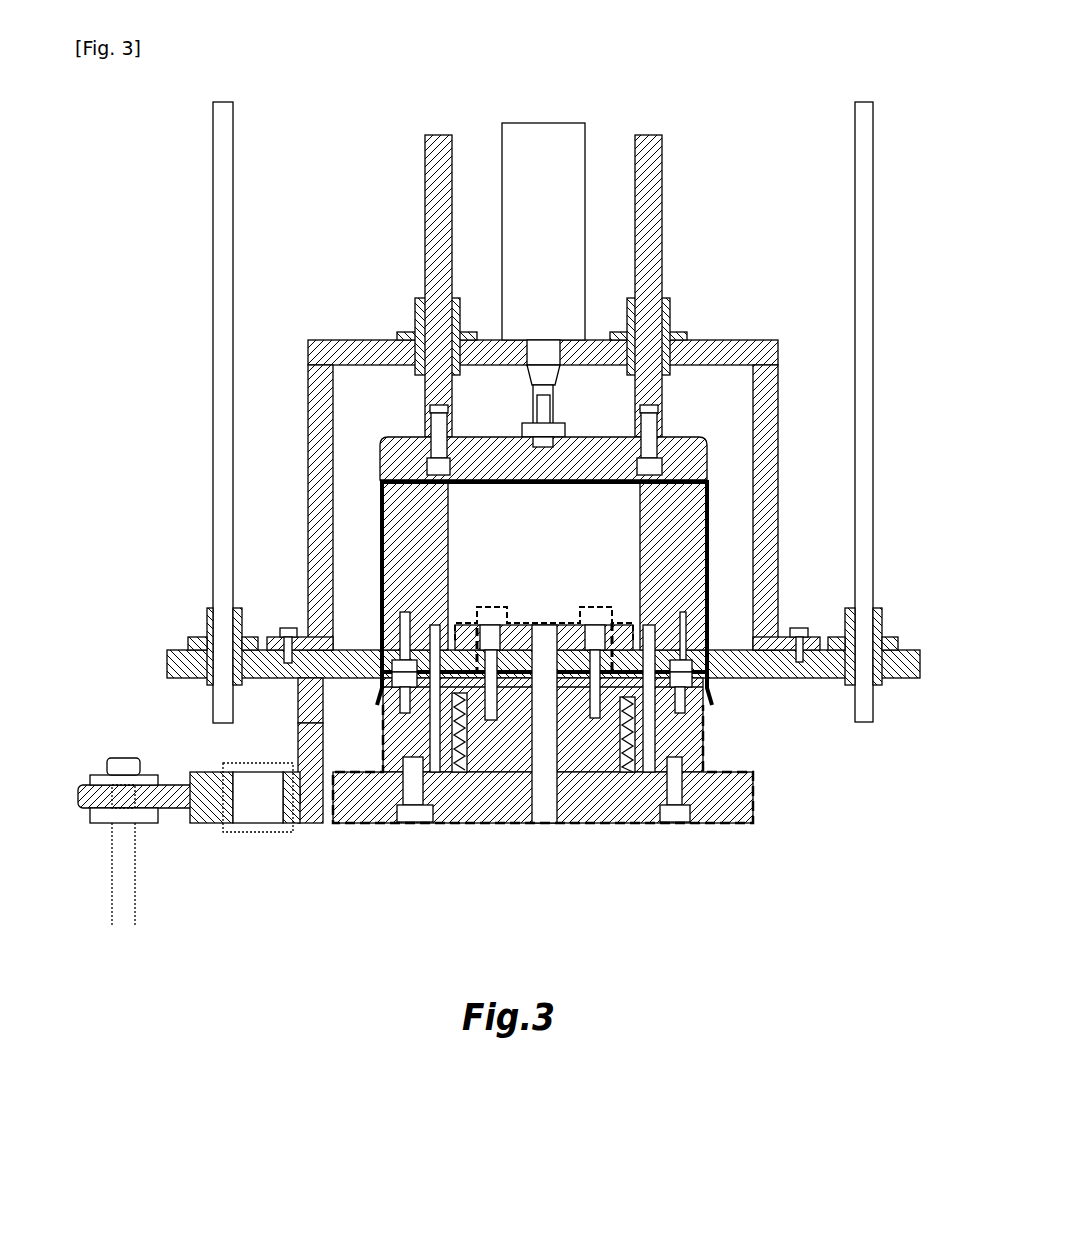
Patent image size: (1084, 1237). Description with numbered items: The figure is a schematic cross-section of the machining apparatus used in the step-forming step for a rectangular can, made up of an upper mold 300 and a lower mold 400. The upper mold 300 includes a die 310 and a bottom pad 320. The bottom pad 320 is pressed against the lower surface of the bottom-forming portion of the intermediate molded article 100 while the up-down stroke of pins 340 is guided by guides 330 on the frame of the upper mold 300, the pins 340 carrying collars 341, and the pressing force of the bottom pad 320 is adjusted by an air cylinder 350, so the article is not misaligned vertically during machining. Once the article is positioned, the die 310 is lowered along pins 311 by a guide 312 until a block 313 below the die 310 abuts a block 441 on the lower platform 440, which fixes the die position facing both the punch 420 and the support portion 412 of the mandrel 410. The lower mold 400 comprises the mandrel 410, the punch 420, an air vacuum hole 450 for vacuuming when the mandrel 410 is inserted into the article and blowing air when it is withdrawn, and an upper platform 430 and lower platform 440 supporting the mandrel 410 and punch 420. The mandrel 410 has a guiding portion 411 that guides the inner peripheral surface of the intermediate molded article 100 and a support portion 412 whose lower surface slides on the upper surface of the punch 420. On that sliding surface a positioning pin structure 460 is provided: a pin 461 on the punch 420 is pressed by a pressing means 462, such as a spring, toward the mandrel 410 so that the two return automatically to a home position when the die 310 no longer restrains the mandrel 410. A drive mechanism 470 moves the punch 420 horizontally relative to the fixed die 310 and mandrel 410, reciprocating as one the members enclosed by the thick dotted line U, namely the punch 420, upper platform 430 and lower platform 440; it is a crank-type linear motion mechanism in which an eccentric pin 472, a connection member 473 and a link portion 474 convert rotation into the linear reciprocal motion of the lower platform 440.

The intermediate molded article 100 is at (708, 518).
The upper mold 300 is at (498, 403).
The die 310 is at (727, 657).
The pins 311 is at (233, 410).
The guide 312 is at (207, 608).
The block 313 is at (302, 697).
The bottom pad 320 is at (705, 440).
The guides 330 is at (670, 310).
The pins 340 is at (663, 193).
The rod collar 341 is at (663, 232).
The air cylinder 350 is at (543, 138).
The lower mold 400 is at (556, 694).
The mandrel 410 is at (533, 581).
The guiding portion 411 is at (382, 512).
The support portion 412 is at (380, 647).
The punch 420 is at (365, 685).
The upper platform 430 is at (703, 730).
The lower platform 440 is at (750, 787).
The block 441 is at (317, 823).
The air vacuum hole 450 is at (520, 772).
The positioning pin structure 460 is at (703, 752).
The pin 461 is at (620, 745).
The pressing means 462 is at (628, 823).
The drive mechanism 470 is at (198, 827).
The eccentric pin 472 is at (128, 880).
The connection member 473 is at (173, 785).
The link portion 474 is at (262, 832).
The thick dotted line U is at (705, 828).